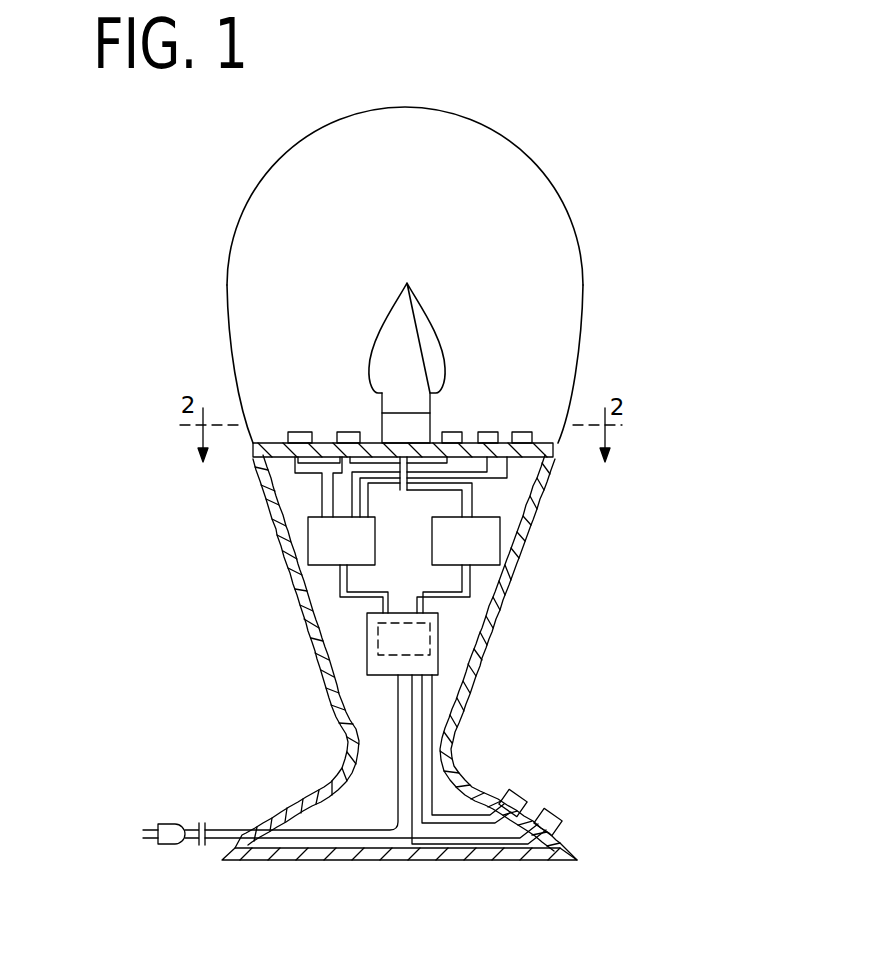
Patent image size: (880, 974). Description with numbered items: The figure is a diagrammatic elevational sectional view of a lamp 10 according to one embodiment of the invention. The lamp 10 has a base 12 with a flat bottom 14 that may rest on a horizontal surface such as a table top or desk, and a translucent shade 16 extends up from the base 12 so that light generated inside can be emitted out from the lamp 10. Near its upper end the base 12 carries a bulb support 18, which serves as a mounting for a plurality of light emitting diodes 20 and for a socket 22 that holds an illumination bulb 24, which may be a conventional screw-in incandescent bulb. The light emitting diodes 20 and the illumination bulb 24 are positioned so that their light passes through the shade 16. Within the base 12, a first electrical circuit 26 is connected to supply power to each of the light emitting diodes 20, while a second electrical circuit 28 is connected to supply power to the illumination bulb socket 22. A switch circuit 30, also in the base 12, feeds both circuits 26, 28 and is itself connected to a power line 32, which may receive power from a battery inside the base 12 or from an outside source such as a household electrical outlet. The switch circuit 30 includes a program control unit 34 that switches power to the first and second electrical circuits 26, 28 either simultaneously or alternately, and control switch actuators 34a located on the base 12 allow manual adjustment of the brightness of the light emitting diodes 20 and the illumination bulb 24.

The lamp 10 is at (716, 261).
The base 12 is at (333, 705).
The flat bottom 14 is at (300, 864).
The translucent shade 16 is at (232, 292).
The bulb support 18 is at (282, 432).
The light emitting diodes 20 is at (345, 432).
The socket 22 is at (388, 430).
The illumination bulb 24 is at (440, 335).
The first electrical circuit 26 is at (325, 543).
The second electrical circuit 28 is at (487, 541).
The switch circuit 30 is at (370, 650).
The power line 32 is at (408, 780).
The program control unit 34 is at (430, 635).
The control switch actuators 34a is at (556, 816).